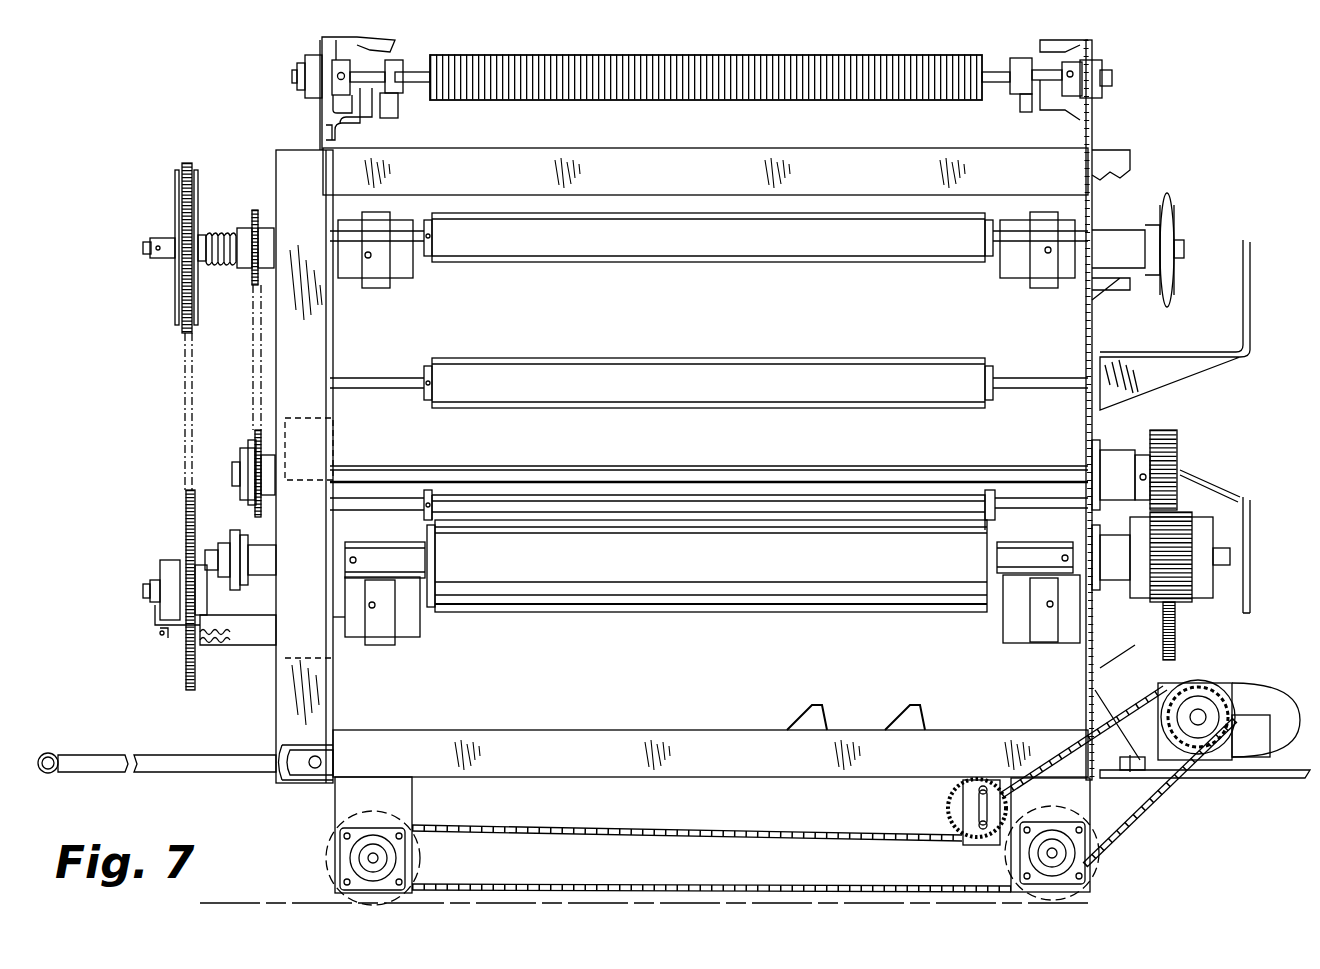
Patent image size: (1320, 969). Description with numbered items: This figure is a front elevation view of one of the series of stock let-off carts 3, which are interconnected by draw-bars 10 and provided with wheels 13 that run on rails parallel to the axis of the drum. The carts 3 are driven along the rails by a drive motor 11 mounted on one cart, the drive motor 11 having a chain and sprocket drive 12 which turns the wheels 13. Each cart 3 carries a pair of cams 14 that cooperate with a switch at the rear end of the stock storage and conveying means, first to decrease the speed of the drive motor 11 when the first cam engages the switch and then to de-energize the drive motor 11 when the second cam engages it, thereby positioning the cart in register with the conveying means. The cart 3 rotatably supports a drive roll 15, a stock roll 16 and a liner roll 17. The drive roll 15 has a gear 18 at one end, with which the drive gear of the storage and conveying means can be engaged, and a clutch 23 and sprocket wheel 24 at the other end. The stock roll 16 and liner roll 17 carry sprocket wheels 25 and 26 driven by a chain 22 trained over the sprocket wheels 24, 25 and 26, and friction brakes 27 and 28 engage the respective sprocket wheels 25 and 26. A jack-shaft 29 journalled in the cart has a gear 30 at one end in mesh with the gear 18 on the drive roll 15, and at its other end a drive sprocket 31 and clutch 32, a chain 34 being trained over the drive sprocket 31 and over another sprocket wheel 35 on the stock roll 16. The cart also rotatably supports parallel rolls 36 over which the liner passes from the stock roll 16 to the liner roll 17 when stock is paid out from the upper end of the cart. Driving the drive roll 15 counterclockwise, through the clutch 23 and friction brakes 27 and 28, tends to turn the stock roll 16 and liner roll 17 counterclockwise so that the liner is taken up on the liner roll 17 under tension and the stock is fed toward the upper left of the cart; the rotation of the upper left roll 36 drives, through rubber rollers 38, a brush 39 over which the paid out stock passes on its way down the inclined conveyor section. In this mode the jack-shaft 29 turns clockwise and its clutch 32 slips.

The stock let-off cart 3 is at (288, 150).
The draw-bar 10 is at (230, 755).
The drive motor 11 is at (1265, 688).
The chain and sprocket drive 12 is at (1130, 812).
The wheels 13 is at (335, 849).
The cams 14 is at (885, 708).
The drive roll 15 is at (707, 566).
The stock roll 16 is at (1005, 262).
The liner roll 17 is at (945, 615).
The gear 18 is at (1185, 602).
The chain 22 is at (183, 367).
The clutch 23 is at (232, 540).
The sprocket wheel 24 is at (185, 500).
The sprocket wheel 25 is at (185, 165).
The sprocket wheel 26 is at (180, 590).
The friction brake 27 is at (218, 234).
The friction brake 28 is at (225, 628).
The jack-shaft 29 is at (1030, 470).
The gear 30 is at (1172, 430).
The drive sprocket 31 is at (252, 440).
The clutch 32 is at (250, 460).
The chain 34 is at (250, 331).
The sprocket wheel 35 is at (252, 283).
The parallel rolls 36 is at (780, 262).
The rubber rollers 38 is at (400, 104).
The brush 39 is at (762, 100).